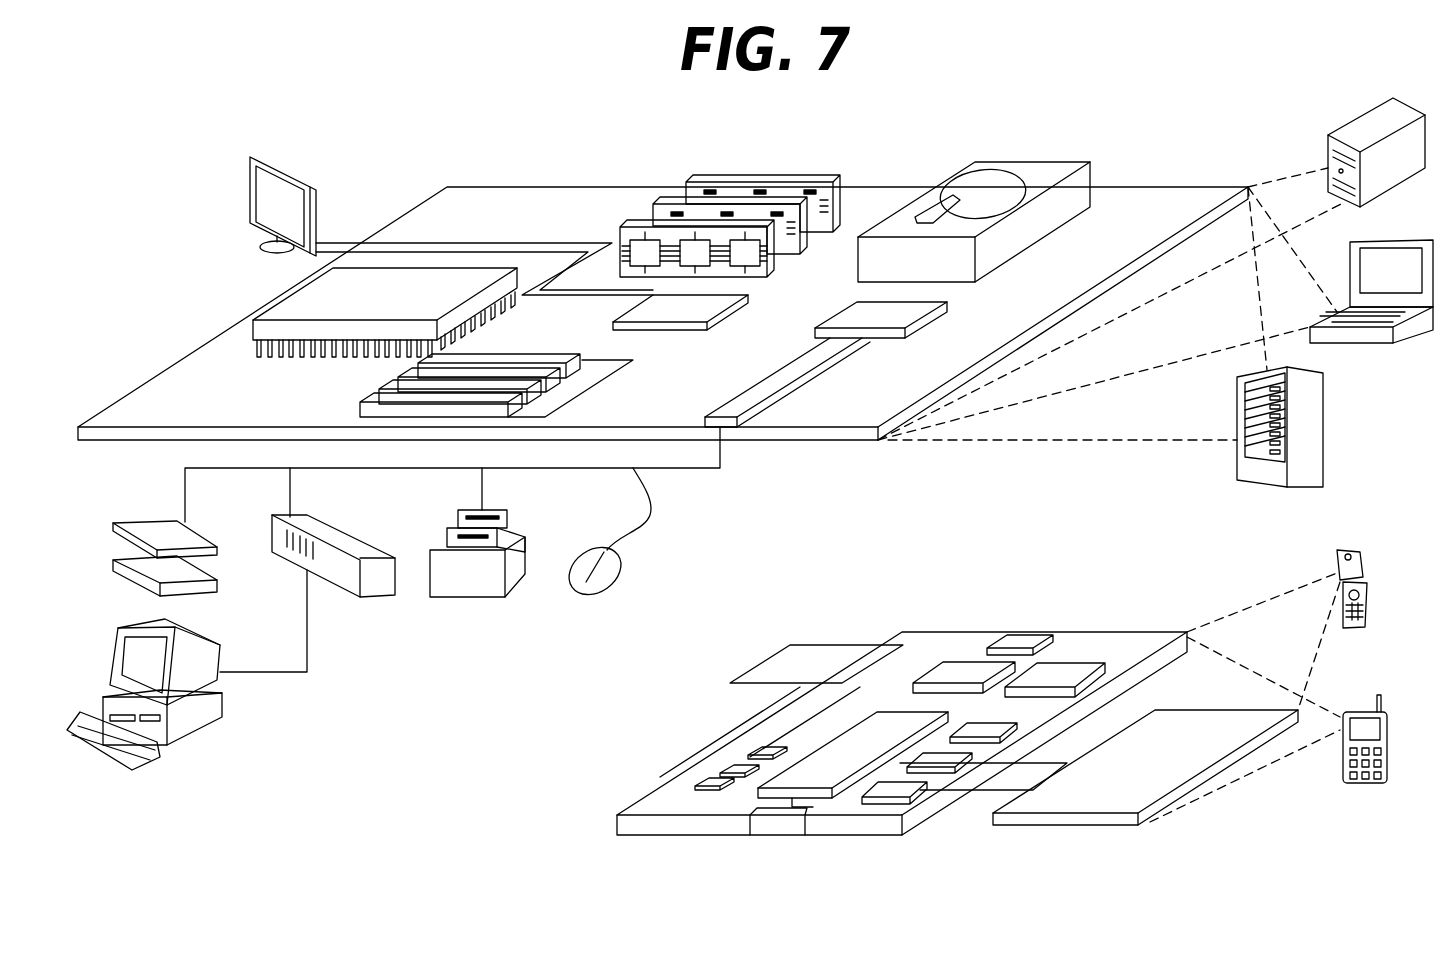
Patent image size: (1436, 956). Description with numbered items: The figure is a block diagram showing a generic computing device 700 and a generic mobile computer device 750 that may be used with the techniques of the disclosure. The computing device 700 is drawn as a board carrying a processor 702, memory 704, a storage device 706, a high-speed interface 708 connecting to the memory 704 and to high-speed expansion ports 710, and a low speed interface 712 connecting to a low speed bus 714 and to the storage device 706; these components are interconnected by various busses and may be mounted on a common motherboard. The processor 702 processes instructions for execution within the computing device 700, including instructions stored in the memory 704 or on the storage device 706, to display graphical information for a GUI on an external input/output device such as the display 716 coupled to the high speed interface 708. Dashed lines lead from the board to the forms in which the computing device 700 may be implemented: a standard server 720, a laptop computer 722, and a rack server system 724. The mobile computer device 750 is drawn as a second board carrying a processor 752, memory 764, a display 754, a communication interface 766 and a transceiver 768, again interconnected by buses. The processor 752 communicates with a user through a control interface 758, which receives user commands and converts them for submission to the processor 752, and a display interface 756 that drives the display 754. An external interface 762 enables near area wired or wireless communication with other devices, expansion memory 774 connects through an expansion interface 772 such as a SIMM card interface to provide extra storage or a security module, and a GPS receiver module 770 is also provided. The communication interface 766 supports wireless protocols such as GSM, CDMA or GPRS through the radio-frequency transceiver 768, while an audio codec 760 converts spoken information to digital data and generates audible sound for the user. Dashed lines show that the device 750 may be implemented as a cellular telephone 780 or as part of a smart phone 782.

The computing device 700 is at (398, 137).
The processor 702 is at (278, 300).
The memory 704 is at (767, 180).
The storage device 706 is at (1019, 162).
The high-speed interface 708 is at (693, 303).
The high-speed expansion ports 710 is at (386, 386).
The low speed interface 712 is at (850, 312).
The low speed bus 714 is at (727, 412).
The display 716 is at (257, 152).
The standard server 720 is at (1352, 130).
The laptop computer 722 is at (1410, 240).
The rack server system 724 is at (1324, 428).
The mobile computer device 750 is at (572, 841).
The processor 752 is at (820, 760).
The display 754 is at (1188, 728).
The display interface 756 is at (913, 790).
The control interface 758 is at (947, 760).
The audio codec 760 is at (988, 727).
The external interface 762 is at (777, 814).
The memory 764 is at (728, 765).
The communication interface 766 is at (965, 668).
The transceiver 768 is at (1065, 668).
The GPS receiver module 770 is at (1020, 643).
The expansion interface 772 is at (882, 645).
The expansion memory 774 is at (792, 645).
The cellular telephone 780 is at (1350, 548).
The smart phone 782 is at (1359, 712).